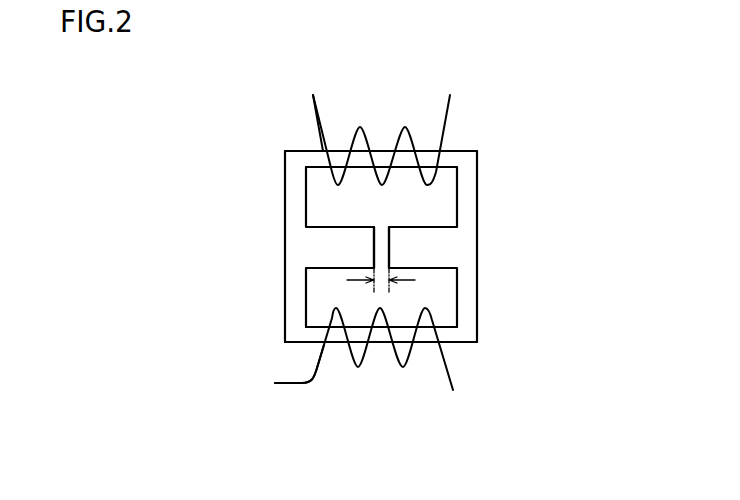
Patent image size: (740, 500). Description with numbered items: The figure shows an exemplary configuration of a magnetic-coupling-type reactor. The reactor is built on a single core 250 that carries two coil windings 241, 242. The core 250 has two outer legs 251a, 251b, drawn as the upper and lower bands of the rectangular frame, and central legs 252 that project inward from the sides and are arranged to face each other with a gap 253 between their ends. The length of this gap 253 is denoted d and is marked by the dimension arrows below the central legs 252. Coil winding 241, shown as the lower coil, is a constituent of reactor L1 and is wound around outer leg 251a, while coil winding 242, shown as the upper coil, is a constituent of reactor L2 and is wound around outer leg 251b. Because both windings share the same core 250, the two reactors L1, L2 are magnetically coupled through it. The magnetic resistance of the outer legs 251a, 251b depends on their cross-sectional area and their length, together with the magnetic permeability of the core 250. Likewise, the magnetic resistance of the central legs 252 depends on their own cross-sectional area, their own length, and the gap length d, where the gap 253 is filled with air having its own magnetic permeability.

The core 250 is at (370, 248).
The outer leg 251a is at (457, 335).
The outer leg 251b is at (457, 160).
The central legs 252 is at (333, 245).
The gap 253 is at (382, 228).
The gap length d is at (382, 285).
The coil winding 241 is at (320, 362).
The coil winding 242 is at (318, 123).
The reactor L1 is at (358, 384).
The reactor L2 is at (362, 110).